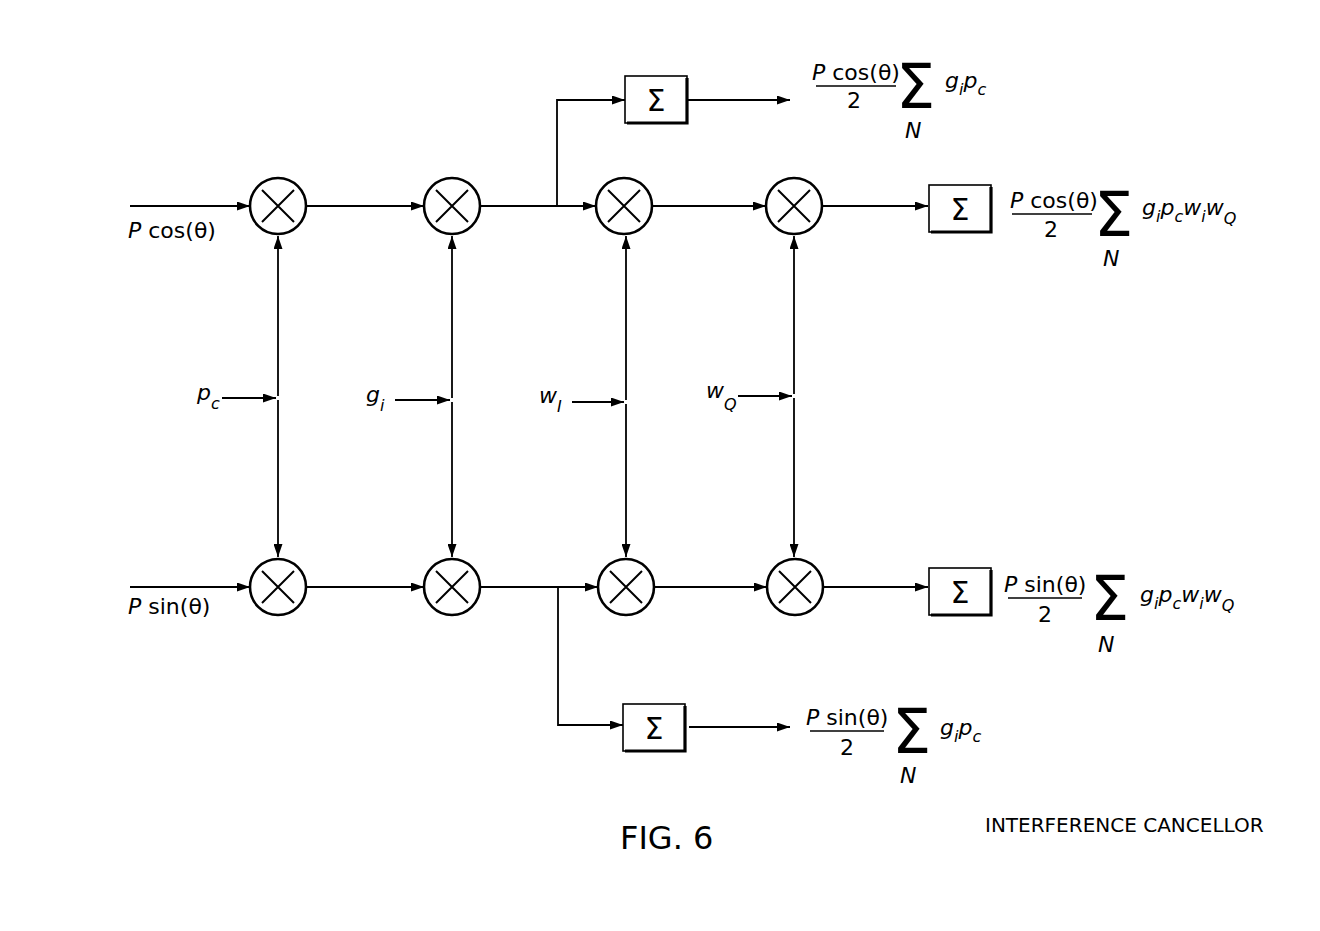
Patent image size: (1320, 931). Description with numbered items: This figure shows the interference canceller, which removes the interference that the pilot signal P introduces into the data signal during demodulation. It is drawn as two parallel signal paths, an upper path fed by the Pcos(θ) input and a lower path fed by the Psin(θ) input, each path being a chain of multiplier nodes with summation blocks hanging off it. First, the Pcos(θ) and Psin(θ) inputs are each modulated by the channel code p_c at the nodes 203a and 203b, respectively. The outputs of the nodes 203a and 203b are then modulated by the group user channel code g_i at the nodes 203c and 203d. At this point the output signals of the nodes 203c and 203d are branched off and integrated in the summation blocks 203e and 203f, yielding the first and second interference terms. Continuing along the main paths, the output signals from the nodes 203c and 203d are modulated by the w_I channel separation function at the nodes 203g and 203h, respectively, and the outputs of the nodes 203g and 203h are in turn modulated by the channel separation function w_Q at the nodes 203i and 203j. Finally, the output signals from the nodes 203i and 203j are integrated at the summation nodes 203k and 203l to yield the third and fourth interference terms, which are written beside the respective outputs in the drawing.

The node 203a is at (297, 186).
The node 203b is at (297, 567).
The node 203c is at (471, 186).
The node 203d is at (471, 567).
The integration node 203e is at (625, 88).
The integration node 203f is at (622, 743).
The node 203g is at (643, 186).
The node 203h is at (645, 567).
The node 203i is at (813, 186).
The node 203j is at (814, 567).
The integration node 203k is at (960, 235).
The integration node 203l is at (951, 617).